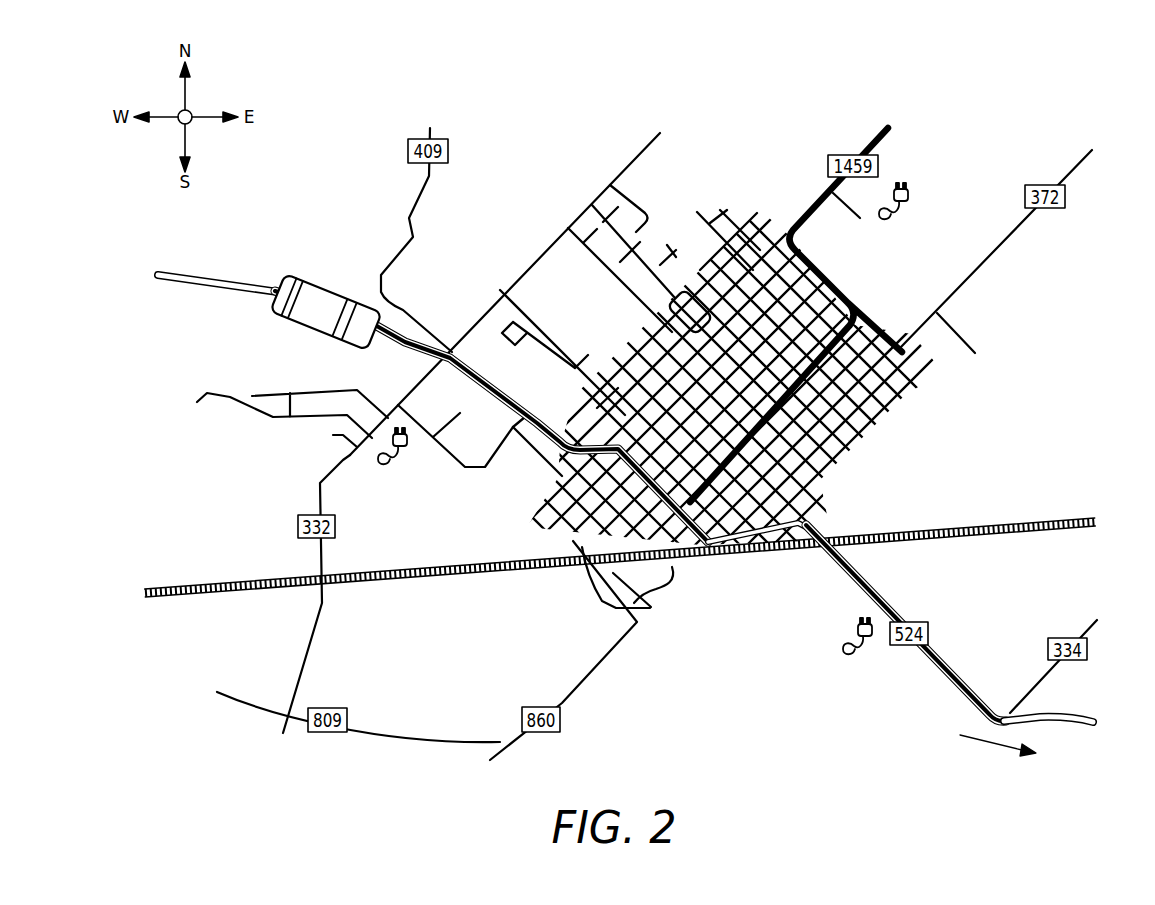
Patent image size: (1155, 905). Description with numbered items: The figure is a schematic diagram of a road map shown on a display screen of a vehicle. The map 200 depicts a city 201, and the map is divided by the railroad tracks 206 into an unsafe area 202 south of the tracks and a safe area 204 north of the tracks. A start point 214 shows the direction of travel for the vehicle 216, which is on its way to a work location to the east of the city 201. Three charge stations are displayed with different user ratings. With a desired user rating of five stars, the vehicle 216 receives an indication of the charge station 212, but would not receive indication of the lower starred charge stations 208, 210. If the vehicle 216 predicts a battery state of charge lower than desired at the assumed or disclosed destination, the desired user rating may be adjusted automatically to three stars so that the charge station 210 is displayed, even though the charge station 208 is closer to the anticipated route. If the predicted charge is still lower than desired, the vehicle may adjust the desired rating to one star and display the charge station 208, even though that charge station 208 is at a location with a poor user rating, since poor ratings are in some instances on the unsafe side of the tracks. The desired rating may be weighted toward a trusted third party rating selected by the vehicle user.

The map 200 is at (890, 96).
The city 201 is at (559, 220).
The unsafe area 202 is at (718, 729).
The safe area 204 is at (942, 423).
The railroad tracks 206 is at (1029, 519).
The charge station 208 is at (855, 635).
The charge station 210 is at (410, 460).
The charge station 212 is at (913, 200).
The start point 214 is at (246, 253).
The vehicle 216 is at (326, 298).